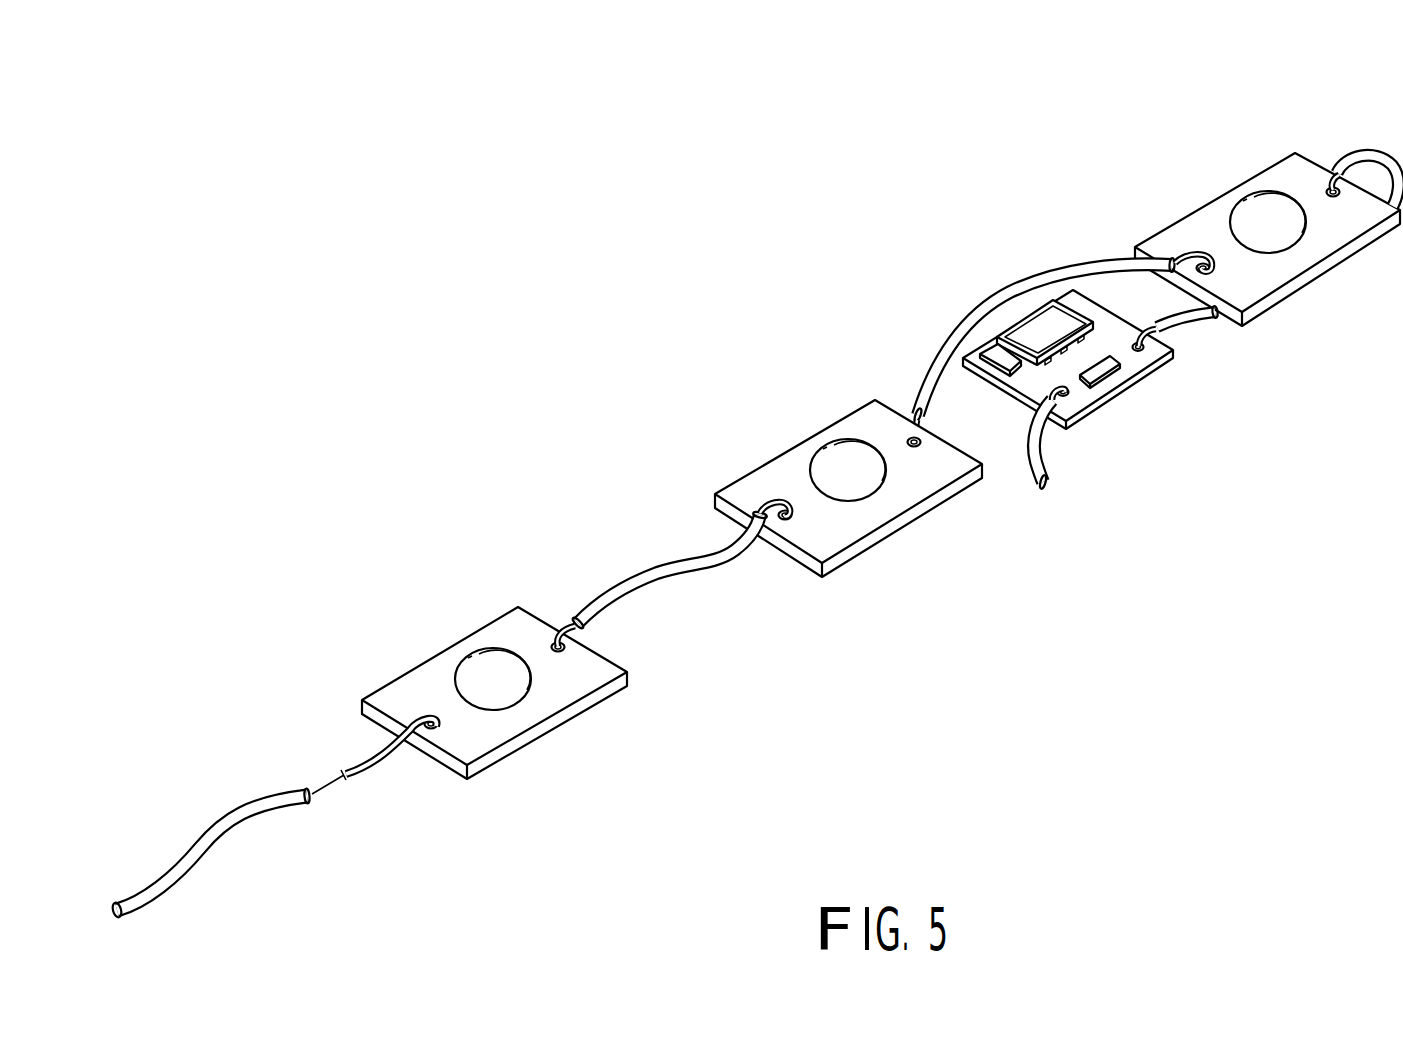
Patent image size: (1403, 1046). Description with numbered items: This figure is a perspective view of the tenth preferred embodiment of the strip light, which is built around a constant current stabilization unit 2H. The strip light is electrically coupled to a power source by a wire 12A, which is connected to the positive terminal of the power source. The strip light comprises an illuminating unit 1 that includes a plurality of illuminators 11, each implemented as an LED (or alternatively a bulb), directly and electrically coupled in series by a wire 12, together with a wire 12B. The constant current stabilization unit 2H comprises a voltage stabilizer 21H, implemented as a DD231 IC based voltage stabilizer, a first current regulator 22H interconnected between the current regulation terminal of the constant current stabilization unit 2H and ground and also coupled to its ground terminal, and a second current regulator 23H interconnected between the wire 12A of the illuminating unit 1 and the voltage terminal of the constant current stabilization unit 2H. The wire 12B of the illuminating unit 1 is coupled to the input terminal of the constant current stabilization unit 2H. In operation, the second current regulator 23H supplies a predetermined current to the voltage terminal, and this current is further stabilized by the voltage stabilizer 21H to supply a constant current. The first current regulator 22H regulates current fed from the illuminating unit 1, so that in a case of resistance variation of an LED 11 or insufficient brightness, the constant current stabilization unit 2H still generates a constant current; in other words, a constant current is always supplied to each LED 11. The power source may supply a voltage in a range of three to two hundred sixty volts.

The illuminating unit 1 is at (755, 485).
The illuminator 11 is at (825, 460).
The wire 12 is at (657, 570).
The wire 12A is at (256, 808).
The wire 12B is at (1202, 322).
The constant current stabilization unit 2H is at (1115, 329).
The voltage stabilizer 21H is at (1047, 330).
The first current regulator 22H is at (1103, 378).
The second current regulator 23H is at (990, 351).